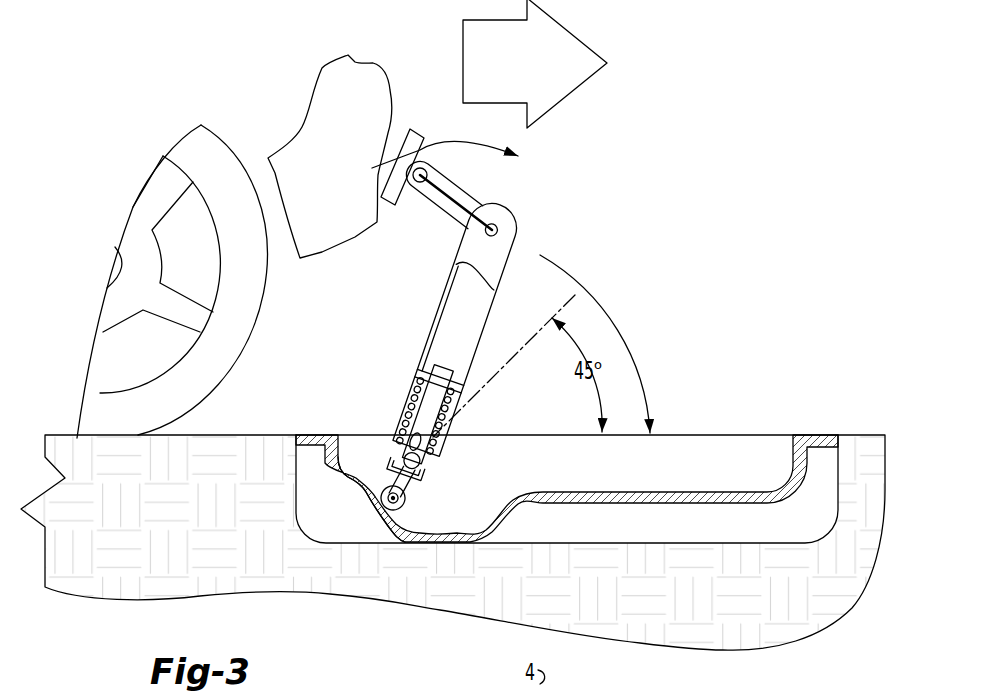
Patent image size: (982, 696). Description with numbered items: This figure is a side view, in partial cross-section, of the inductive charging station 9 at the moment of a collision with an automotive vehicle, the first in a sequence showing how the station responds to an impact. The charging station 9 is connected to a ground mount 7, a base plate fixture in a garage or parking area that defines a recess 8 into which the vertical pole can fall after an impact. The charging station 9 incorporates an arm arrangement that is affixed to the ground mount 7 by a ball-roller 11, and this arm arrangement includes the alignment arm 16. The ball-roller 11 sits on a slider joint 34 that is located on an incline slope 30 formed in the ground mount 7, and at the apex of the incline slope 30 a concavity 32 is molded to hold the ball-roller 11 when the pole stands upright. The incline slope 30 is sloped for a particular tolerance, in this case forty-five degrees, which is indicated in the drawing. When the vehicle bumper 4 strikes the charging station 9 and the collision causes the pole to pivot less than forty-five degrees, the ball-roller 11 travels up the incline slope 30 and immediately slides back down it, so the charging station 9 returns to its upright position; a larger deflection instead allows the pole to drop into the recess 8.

The vehicle bumper 4 is at (379, 58).
The ground mount 7 is at (824, 435).
The recess 8 is at (681, 447).
The charging station 9 is at (610, 231).
The ball-roller 11 is at (406, 506).
The alignment arm 16 is at (443, 216).
The incline slope 30 is at (391, 480).
The concavity 32 is at (352, 481).
The slider joint 34 is at (440, 457).